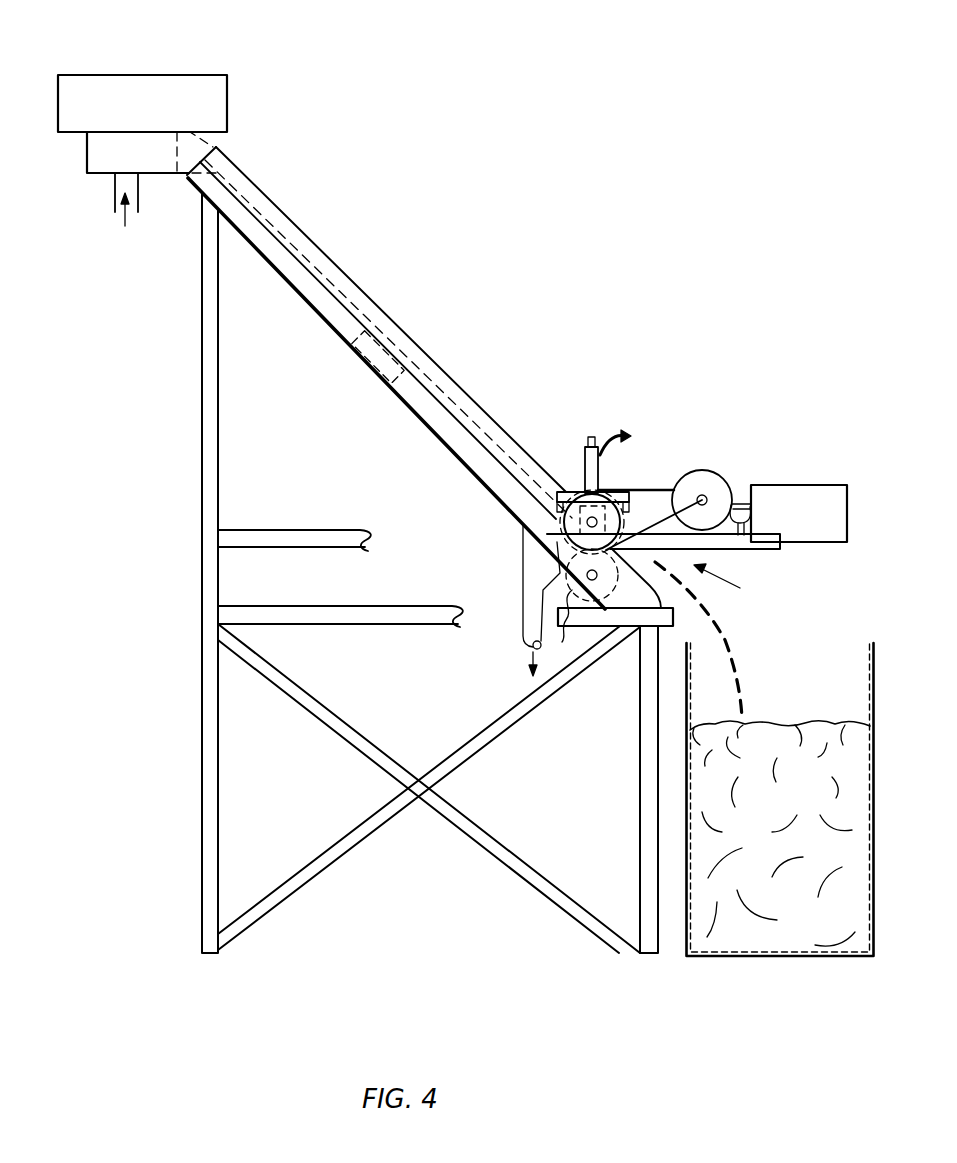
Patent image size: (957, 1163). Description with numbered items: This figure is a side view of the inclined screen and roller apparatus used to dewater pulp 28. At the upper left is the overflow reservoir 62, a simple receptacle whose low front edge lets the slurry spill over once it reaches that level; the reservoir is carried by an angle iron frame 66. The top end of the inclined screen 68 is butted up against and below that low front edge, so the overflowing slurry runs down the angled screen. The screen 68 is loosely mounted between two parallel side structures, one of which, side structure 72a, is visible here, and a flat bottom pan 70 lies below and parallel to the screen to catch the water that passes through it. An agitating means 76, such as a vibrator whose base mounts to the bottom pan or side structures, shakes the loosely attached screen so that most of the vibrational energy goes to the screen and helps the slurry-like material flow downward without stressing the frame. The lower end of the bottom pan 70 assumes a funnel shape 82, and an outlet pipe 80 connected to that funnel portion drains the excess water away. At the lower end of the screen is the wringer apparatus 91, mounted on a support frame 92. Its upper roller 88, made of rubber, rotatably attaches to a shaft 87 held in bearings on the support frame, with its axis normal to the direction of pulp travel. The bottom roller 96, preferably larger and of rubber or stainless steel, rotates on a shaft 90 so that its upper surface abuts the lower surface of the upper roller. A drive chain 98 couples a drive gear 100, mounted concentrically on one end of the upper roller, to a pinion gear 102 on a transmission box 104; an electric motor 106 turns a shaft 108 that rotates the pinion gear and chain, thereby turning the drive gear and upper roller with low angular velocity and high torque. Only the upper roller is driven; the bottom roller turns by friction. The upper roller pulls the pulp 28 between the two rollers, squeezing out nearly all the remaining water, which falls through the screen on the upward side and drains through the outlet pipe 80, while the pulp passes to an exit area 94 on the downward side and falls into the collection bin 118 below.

The pulp 28 is at (818, 727).
The overflow reservoir 62 is at (140, 66).
The angle iron frame 66 is at (208, 395).
The inclined screen 68 is at (318, 251).
The bottom pan 70 is at (422, 420).
The side structure 72a is at (478, 468).
The agitating means 76 is at (365, 347).
The outlet pipe 80 is at (525, 635).
The funnel shape 82 is at (524, 556).
The shaft 87 is at (596, 516).
The upper roller 88 is at (566, 490).
The shaft 90 is at (587, 583).
The wringer apparatus 91 is at (627, 360).
The support frame 92 is at (575, 490).
The exit area 94 is at (664, 576).
The bottom roller 96 is at (562, 642).
The drive chain 98 is at (675, 487).
The drive gear 100 is at (652, 490).
The pinion gear 102 is at (706, 472).
The transmission box 104 is at (722, 487).
The electric motor 106 is at (810, 483).
The shaft 108 is at (752, 528).
The collection bin 118 is at (755, 956).